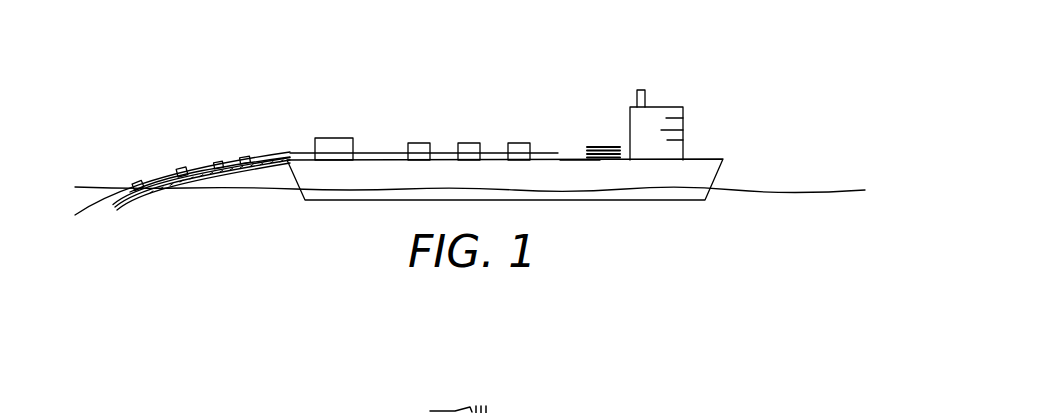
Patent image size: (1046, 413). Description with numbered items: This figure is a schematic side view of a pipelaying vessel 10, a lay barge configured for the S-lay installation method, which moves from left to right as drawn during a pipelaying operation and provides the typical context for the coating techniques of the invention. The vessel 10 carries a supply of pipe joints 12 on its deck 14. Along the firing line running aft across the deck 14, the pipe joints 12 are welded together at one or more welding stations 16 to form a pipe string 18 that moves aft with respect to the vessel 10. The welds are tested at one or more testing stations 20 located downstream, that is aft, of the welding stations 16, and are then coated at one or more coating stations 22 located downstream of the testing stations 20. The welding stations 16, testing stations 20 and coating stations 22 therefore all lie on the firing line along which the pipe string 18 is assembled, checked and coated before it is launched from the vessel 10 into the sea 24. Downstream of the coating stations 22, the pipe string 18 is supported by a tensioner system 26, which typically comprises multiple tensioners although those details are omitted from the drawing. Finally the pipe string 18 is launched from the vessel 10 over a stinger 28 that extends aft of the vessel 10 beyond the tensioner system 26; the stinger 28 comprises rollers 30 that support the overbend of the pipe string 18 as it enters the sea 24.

The pipelaying vessel 10 is at (679, 55).
The pipe joints 12 is at (601, 145).
The deck 14 is at (571, 160).
The welding stations 16 is at (520, 143).
The pipe string 18 is at (373, 153).
The testing stations 20 is at (468, 143).
The coating stations 22 is at (420, 143).
The sea 24 is at (779, 190).
The tensioner system 26 is at (333, 138).
The stinger 28 is at (243, 155).
The rollers 30 is at (210, 162).